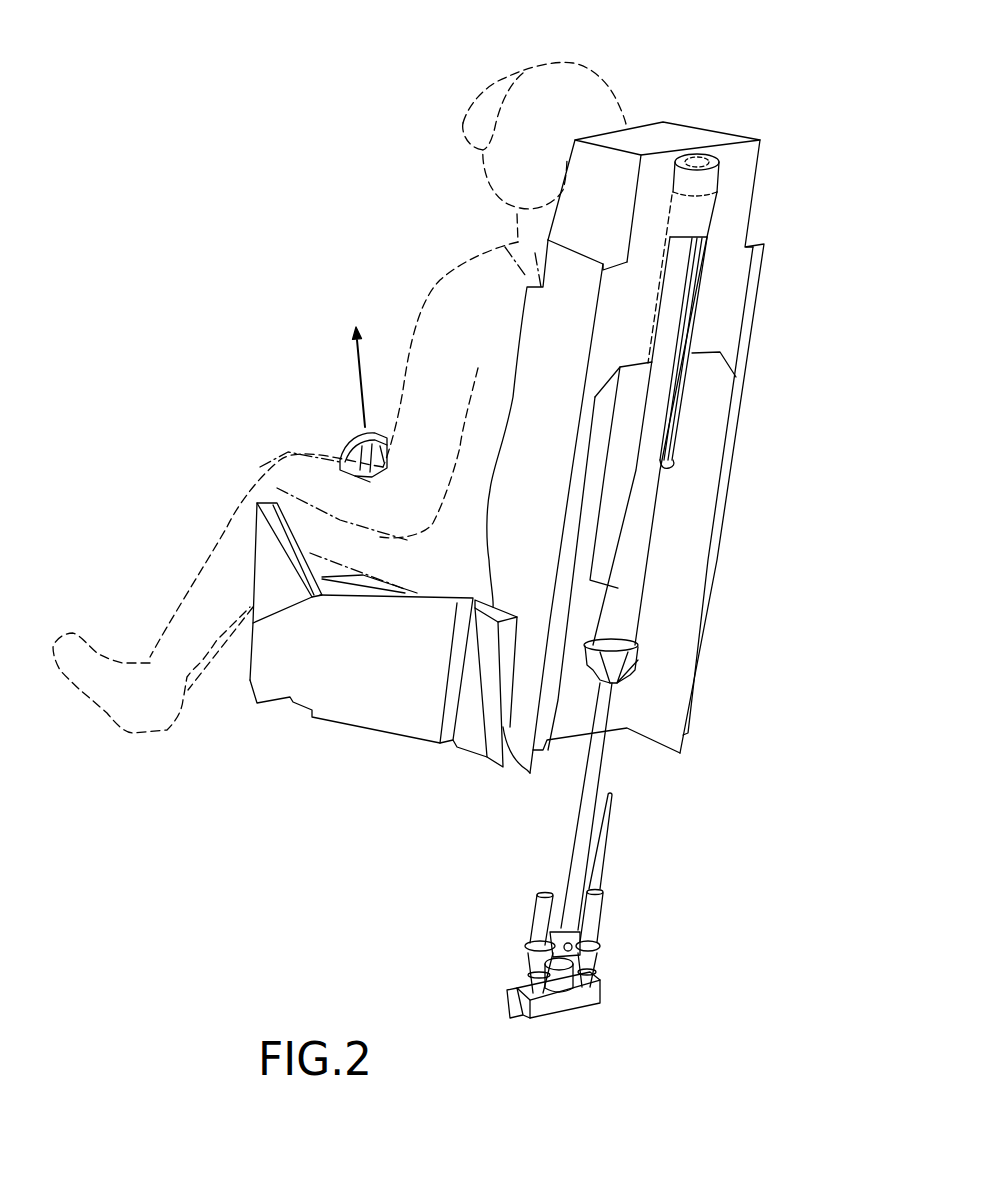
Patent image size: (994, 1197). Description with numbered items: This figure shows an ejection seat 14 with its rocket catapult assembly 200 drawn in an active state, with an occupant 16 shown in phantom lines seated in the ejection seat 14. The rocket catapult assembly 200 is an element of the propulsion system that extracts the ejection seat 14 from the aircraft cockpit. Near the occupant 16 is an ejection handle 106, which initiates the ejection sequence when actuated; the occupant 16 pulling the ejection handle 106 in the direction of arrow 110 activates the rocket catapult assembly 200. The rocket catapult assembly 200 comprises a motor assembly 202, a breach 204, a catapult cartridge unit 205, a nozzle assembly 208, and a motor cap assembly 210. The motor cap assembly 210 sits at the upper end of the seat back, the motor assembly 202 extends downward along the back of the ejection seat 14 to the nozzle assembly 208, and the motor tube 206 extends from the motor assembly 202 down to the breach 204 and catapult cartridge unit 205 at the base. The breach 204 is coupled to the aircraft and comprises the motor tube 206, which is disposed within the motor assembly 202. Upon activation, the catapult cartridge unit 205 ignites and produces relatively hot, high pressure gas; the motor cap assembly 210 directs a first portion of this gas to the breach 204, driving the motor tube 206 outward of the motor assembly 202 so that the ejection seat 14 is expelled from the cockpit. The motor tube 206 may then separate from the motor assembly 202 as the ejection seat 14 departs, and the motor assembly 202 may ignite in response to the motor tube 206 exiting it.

The ejection seat 14 is at (727, 105).
The occupant 16 is at (632, 76).
The ejection handle 106 is at (326, 437).
The arrow 110 is at (353, 359).
The rocket catapult assembly 200 is at (764, 390).
The motor assembly 202 is at (675, 302).
The breach 204 is at (600, 941).
The catapult cartridge unit 205 is at (527, 945).
The motor tube 206 is at (583, 843).
The nozzle assembly 208 is at (636, 656).
The motor cap assembly 210 is at (710, 160).